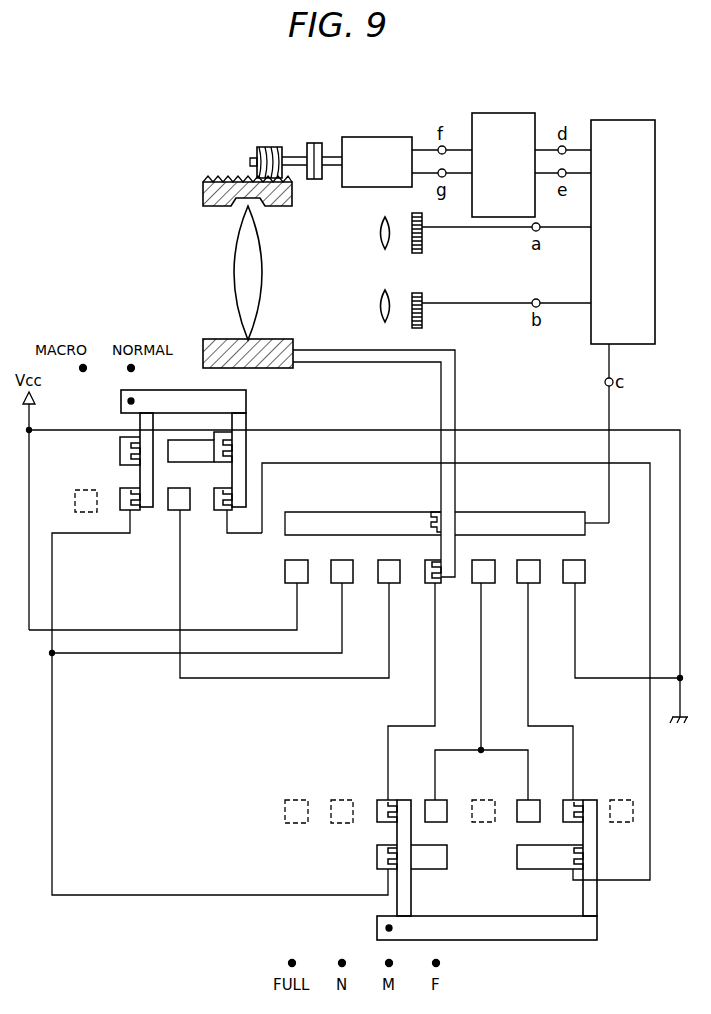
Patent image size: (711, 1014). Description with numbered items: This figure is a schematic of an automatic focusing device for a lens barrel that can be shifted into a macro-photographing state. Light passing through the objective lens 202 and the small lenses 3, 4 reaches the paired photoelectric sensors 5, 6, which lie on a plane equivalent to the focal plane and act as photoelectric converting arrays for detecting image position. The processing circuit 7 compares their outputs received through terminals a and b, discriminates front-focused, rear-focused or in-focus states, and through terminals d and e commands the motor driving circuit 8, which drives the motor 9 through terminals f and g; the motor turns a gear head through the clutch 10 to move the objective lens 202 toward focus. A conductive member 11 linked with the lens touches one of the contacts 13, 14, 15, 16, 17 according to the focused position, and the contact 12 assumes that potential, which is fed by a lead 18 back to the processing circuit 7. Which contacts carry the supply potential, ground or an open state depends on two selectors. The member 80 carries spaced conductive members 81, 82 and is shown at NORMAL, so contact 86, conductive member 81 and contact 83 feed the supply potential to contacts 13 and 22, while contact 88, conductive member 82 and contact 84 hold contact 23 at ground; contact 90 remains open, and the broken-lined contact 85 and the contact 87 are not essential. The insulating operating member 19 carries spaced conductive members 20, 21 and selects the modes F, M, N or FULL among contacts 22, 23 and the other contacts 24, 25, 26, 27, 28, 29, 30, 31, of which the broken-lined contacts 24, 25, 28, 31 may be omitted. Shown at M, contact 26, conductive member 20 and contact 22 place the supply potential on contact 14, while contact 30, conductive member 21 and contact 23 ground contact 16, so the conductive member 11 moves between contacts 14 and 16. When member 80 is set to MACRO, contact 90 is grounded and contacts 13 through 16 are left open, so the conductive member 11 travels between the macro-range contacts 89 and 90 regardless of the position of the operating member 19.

The lens 3 is at (379, 235).
The lens 4 is at (379, 309).
The photoelectric sensor 5 is at (424, 237).
The photoelectric sensor 6 is at (424, 314).
The processing circuit 7 is at (663, 142).
The motor driving circuit 8 is at (503, 113).
The motor 9 is at (377, 137).
The clutch 10 is at (314, 143).
The conductive member 11 is at (447, 400).
The contact 12 is at (532, 512).
The contact 13 is at (353, 577).
The contact 14 is at (447, 577).
The contact 15 is at (495, 577).
The contact 16 is at (540, 577).
The contact 17 is at (585, 577).
The lead wire 18 is at (612, 402).
The operating member 19 is at (590, 928).
The conductive member 20 is at (403, 897).
The conductive member 21 is at (592, 897).
The contact 22 is at (447, 857).
The contact 23 is at (545, 869).
The contact 24 is at (301, 798).
The contact 25 is at (346, 798).
The contact 26 is at (392, 800).
The contact 27 is at (438, 800).
The contact 28 is at (480, 800).
The contact 29 is at (531, 800).
The contact 30 is at (578, 800).
The contact 31 is at (618, 800).
The member 80 is at (240, 403).
The conductive member 81 is at (128, 420).
The conductive member 82 is at (246, 448).
The contact 83 is at (118, 447).
The contact 84 is at (182, 446).
The contact 85 is at (72, 505).
The contact 86 is at (135, 512).
The contact 87 is at (180, 514).
The contact 88 is at (220, 514).
The contact 89 is at (308, 577).
The contact 90 is at (400, 577).
The objective lens 202 is at (232, 269).